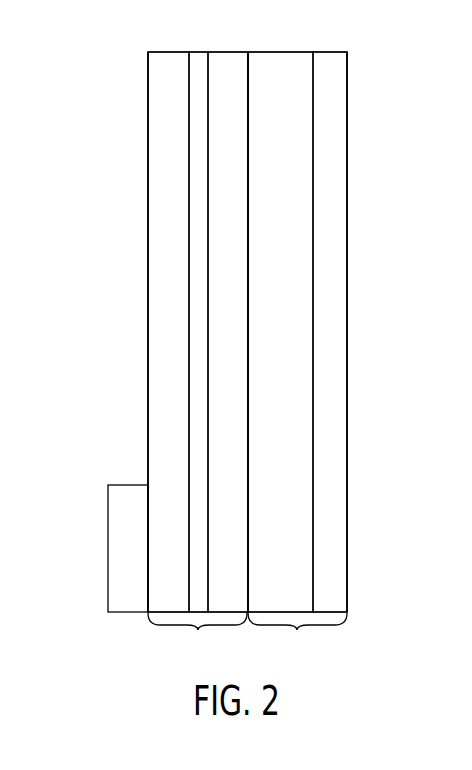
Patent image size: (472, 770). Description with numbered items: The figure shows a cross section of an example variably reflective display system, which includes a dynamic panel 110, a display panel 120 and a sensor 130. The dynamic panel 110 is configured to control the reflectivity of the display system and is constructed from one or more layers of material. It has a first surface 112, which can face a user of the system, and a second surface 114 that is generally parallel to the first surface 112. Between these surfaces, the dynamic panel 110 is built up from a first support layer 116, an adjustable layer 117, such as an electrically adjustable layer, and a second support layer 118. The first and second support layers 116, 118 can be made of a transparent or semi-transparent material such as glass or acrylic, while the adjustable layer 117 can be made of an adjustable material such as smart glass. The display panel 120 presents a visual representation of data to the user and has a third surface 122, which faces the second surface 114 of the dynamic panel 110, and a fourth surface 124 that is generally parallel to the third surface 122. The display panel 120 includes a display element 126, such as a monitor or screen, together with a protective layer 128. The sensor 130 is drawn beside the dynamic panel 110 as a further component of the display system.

The dynamic panel 110 is at (198, 356).
The first surface 112 is at (148, 129).
The second surface 114 is at (247, 78).
The first support layer 116 is at (170, 261).
The adjustable layer 117 is at (200, 290).
The second support layer 118 is at (228, 317).
The display panel 120 is at (297, 356).
The third surface 122 is at (250, 70).
The fourth surface 124 is at (347, 129).
The display element 126 is at (293, 290).
The protective layer 128 is at (323, 261).
The sensor 130 is at (108, 548).